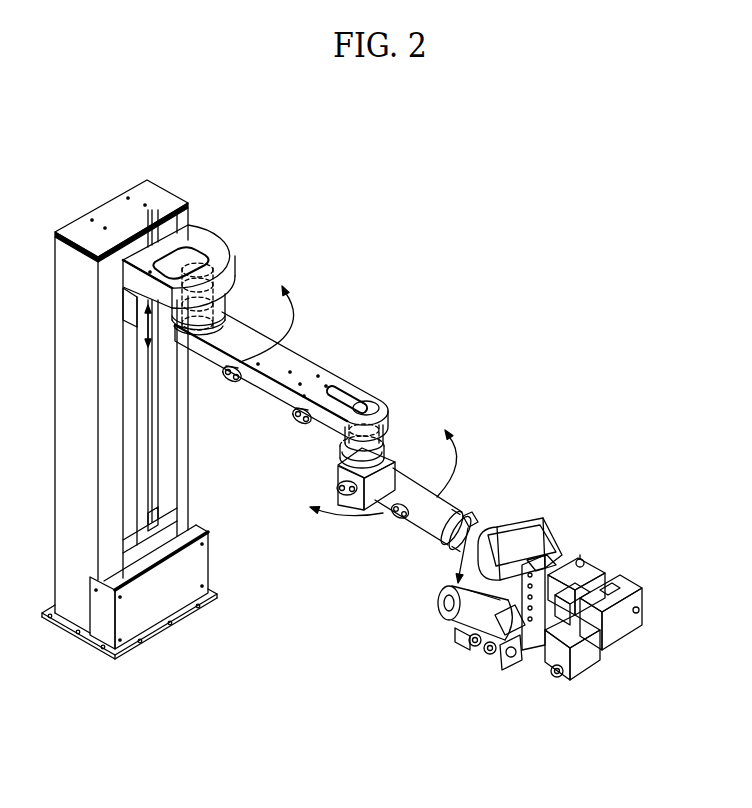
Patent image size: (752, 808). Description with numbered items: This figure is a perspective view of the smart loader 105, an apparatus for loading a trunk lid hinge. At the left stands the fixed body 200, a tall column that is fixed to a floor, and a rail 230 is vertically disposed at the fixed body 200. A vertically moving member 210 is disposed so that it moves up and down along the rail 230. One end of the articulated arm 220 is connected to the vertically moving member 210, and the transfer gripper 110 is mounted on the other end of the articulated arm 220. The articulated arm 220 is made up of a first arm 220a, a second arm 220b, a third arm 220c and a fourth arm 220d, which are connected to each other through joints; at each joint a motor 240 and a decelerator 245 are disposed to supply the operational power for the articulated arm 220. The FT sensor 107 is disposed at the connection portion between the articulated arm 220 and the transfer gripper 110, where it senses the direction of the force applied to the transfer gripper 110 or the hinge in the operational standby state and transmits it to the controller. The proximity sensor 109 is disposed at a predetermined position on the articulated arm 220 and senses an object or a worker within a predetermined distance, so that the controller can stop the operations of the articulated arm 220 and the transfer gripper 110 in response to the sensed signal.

The smart loader 105 is at (345, 320).
The FT sensor 107 is at (447, 525).
The proximity sensor 109 is at (303, 413).
The transfer gripper 110 is at (533, 635).
The fixed body 200 is at (74, 606).
The vertically moving member 210 is at (180, 237).
The articulated arm 220 is at (637, 447).
The first arm 220a is at (337, 387).
The second arm 220b is at (455, 505).
The third arm 220c is at (524, 550).
The fourth arm 220d is at (583, 515).
The rail 230 is at (150, 483).
The motor 240 is at (207, 279).
The decelerator 245 is at (218, 308).